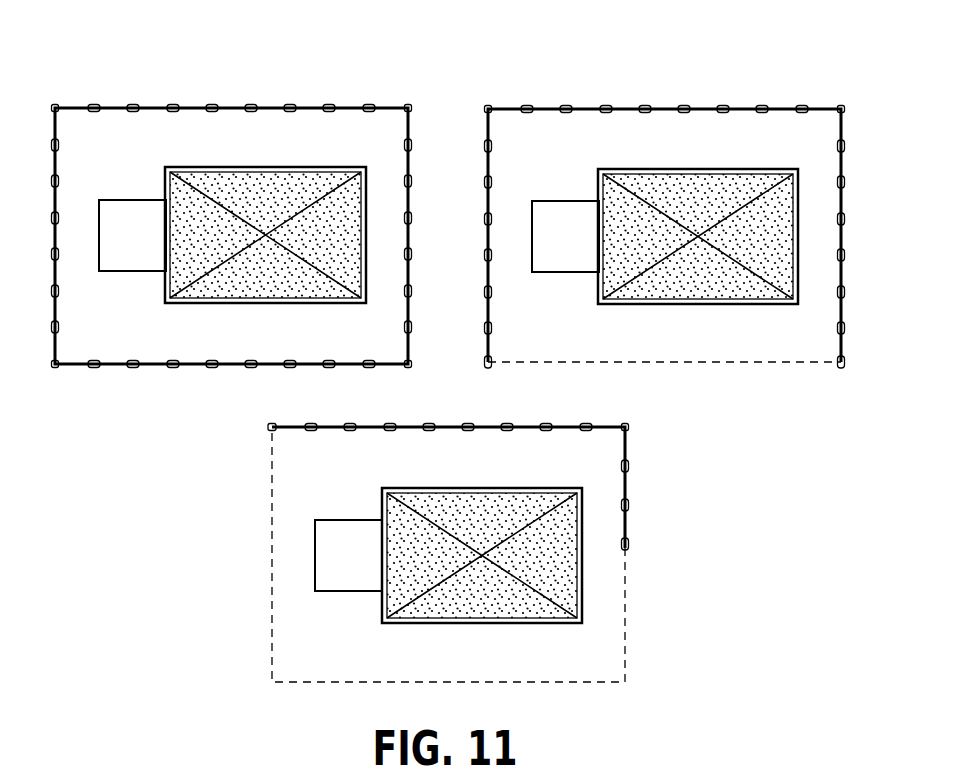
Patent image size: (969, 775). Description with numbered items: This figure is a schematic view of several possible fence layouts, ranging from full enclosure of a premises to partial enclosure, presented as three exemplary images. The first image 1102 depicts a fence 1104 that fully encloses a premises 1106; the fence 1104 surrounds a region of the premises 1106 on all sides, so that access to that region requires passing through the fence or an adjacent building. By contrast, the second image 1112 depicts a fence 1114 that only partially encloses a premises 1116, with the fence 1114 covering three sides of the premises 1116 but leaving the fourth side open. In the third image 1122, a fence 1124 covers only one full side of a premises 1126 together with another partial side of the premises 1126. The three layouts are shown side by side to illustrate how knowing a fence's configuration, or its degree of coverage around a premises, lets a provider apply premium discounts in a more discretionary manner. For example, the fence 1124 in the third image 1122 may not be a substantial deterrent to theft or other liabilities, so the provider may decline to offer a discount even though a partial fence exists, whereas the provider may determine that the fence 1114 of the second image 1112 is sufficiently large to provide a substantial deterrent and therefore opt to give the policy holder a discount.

The first image 1102 is at (232, 227).
The fence 1104 is at (117, 367).
The premises 1106 is at (258, 167).
The second image 1112 is at (665, 184).
The fence 1114 is at (587, 108).
The premises 1116 is at (674, 168).
The third image 1122 is at (522, 553).
The fence 1124 is at (627, 487).
The premises 1126 is at (583, 590).